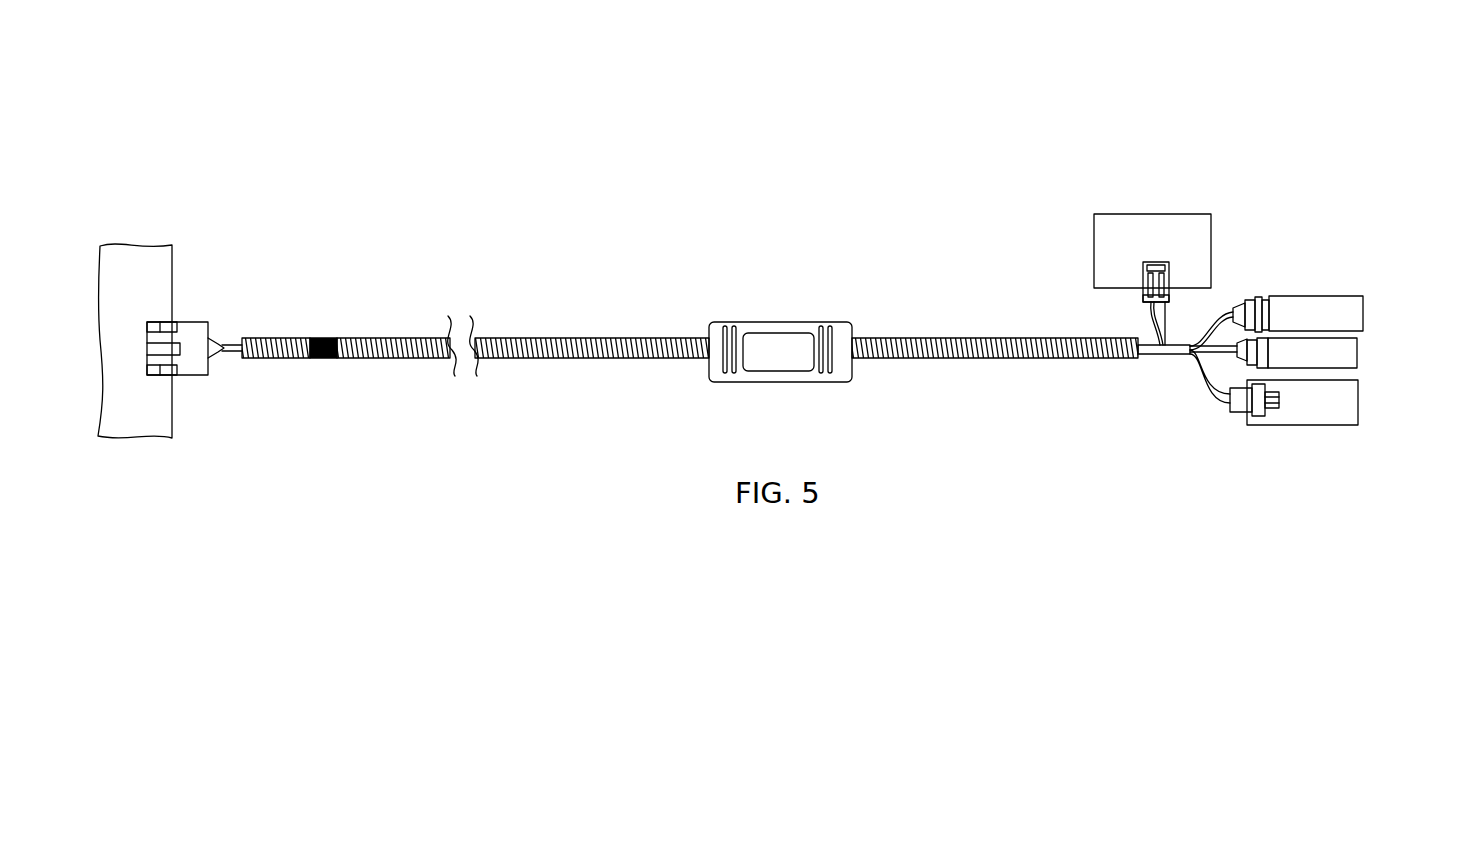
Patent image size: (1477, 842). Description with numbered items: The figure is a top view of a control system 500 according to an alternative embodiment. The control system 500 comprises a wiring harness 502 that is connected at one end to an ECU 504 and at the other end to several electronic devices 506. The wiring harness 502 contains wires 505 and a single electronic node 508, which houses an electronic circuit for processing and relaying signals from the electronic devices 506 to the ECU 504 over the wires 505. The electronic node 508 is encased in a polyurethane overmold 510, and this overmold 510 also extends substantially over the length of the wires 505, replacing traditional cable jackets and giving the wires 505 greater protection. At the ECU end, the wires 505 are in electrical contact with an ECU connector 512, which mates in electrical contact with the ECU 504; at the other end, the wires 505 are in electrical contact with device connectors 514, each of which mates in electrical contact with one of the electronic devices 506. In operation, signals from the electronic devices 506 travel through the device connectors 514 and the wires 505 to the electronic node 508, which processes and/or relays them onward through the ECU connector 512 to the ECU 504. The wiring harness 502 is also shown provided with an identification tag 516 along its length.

The control system 500 is at (363, 167).
The wiring harness 502 is at (522, 336).
The ECU 504 is at (172, 245).
The wires 505 is at (222, 342).
The electronic devices 506 is at (1178, 213).
The electronic node 508 is at (806, 301).
The polyurethane overmold 510 is at (709, 331).
The ECU connector 512 is at (195, 322).
The device connectors 514 is at (1143, 298).
The identification tag 516 is at (325, 338).